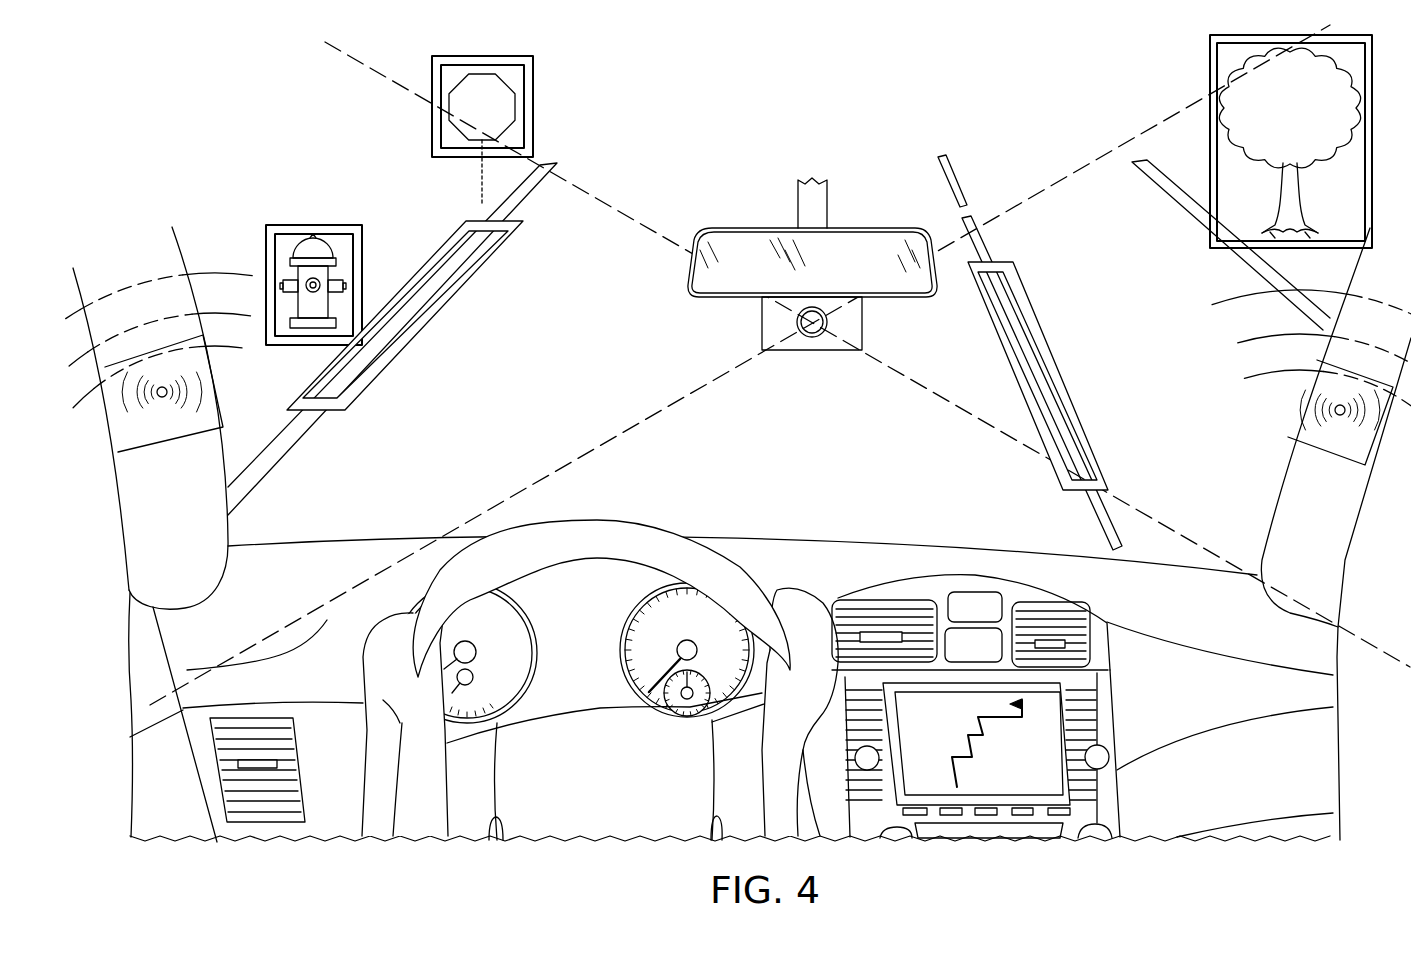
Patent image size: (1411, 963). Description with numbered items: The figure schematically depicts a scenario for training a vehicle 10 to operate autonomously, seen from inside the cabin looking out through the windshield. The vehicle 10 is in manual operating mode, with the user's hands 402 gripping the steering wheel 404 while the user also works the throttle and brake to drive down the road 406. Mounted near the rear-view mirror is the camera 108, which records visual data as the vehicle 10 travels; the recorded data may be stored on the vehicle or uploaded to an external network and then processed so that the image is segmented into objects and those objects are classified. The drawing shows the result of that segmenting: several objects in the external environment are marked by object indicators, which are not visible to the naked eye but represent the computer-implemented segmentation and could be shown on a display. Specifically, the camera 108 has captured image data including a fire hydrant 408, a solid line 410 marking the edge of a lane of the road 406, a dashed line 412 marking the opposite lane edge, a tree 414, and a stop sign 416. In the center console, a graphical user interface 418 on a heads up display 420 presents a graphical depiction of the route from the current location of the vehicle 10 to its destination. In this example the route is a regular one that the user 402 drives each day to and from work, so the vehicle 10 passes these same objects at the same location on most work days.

The vehicle 10 is at (1372, 577).
The camera 108 is at (762, 321).
The user's hands 402 is at (797, 607).
The steering wheel 404 is at (662, 541).
The road 406 is at (812, 424).
The fire hydrant 408 is at (285, 238).
The solid line 410 is at (438, 292).
The dashed line 412 is at (1028, 342).
The tree 414 is at (1224, 68).
The stop sign 416 is at (517, 84).
The graphical user interface 418 is at (1037, 717).
The heads up display 420 is at (1088, 807).